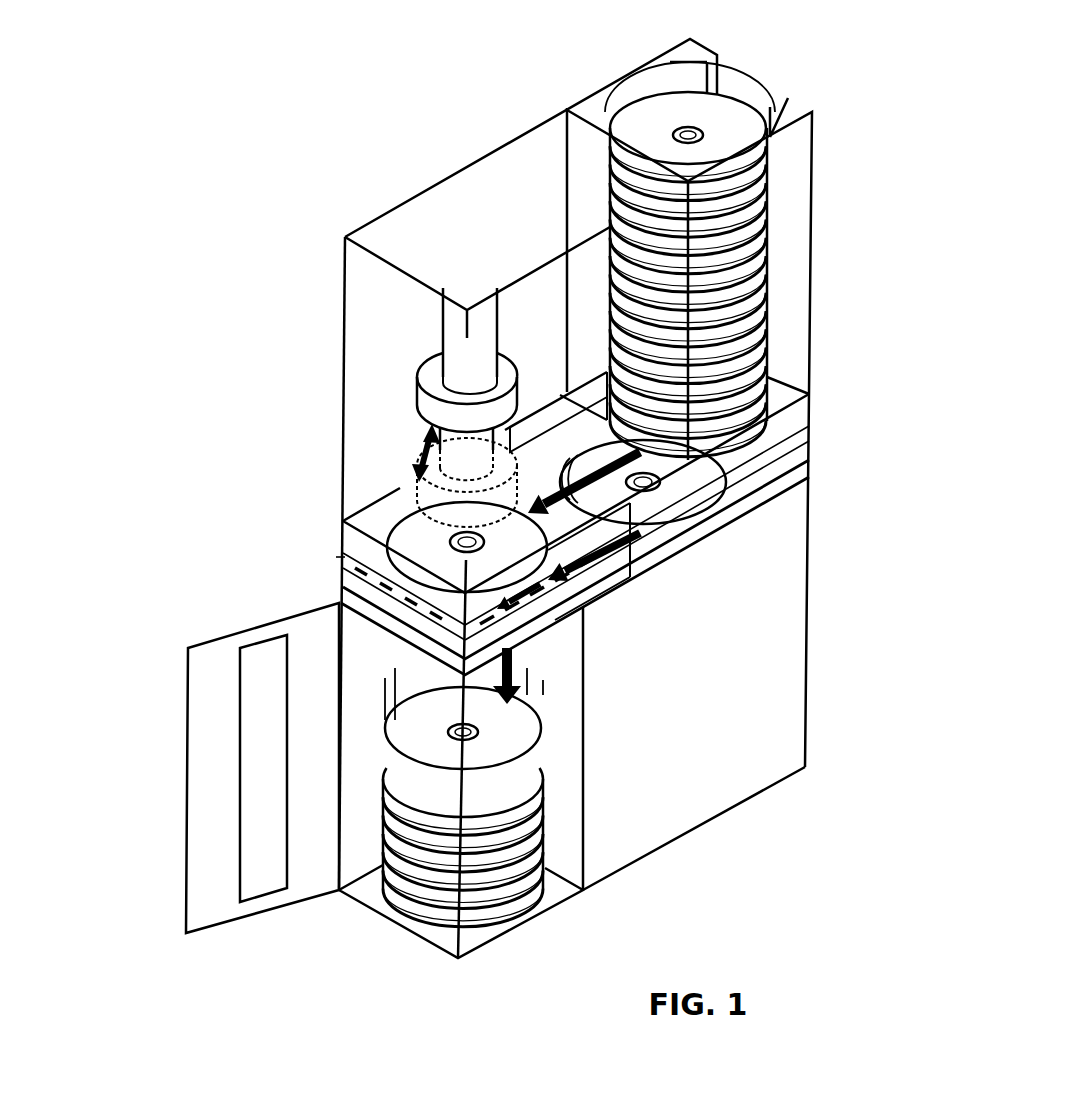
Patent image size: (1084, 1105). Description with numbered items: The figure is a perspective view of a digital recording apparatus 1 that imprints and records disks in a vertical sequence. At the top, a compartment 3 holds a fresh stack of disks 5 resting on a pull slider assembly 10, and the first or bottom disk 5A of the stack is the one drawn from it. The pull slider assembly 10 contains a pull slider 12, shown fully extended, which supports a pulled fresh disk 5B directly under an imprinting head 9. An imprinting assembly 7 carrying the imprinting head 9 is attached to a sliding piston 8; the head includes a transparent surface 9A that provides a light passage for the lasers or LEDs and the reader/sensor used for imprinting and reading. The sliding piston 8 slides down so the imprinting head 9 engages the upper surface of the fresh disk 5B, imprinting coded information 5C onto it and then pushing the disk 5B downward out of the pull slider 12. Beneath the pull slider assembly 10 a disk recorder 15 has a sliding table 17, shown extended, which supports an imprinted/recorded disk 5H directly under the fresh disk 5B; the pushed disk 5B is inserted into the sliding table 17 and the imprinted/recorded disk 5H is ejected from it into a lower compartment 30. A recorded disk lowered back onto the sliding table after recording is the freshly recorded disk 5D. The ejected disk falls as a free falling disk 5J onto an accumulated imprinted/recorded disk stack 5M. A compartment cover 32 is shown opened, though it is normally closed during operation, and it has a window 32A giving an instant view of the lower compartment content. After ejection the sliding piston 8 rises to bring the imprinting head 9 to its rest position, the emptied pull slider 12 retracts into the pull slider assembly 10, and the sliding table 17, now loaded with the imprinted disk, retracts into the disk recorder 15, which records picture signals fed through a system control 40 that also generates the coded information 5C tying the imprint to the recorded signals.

The digital recording apparatus 1 is at (372, 143).
The compartment 3 is at (800, 250).
The fresh stack of disks 5 is at (722, 108).
The first or bottom disk 5A is at (782, 415).
The pulled fresh disk 5B is at (405, 525).
The coded information 5C is at (657, 513).
The freshly recorded disk 5D is at (700, 510).
The imprinted/recorded disk 5H is at (567, 595).
The free falling disk 5J is at (527, 745).
The accumulated imprinted/recorded disk stack 5M is at (472, 815).
The imprinting assembly 7 is at (503, 170).
The sliding piston 8 is at (445, 325).
The imprinting head 9 is at (430, 395).
The transparent surface 9A is at (418, 470).
The pull slider assembly 10 is at (798, 428).
The pull slider 12 is at (345, 557).
The disk recorder 15 is at (797, 468).
The sliding table 17 is at (597, 577).
The lower compartment 30 is at (357, 858).
The compartment cover 32 is at (210, 692).
The window 32A is at (235, 788).
The system control 40 is at (653, 832).